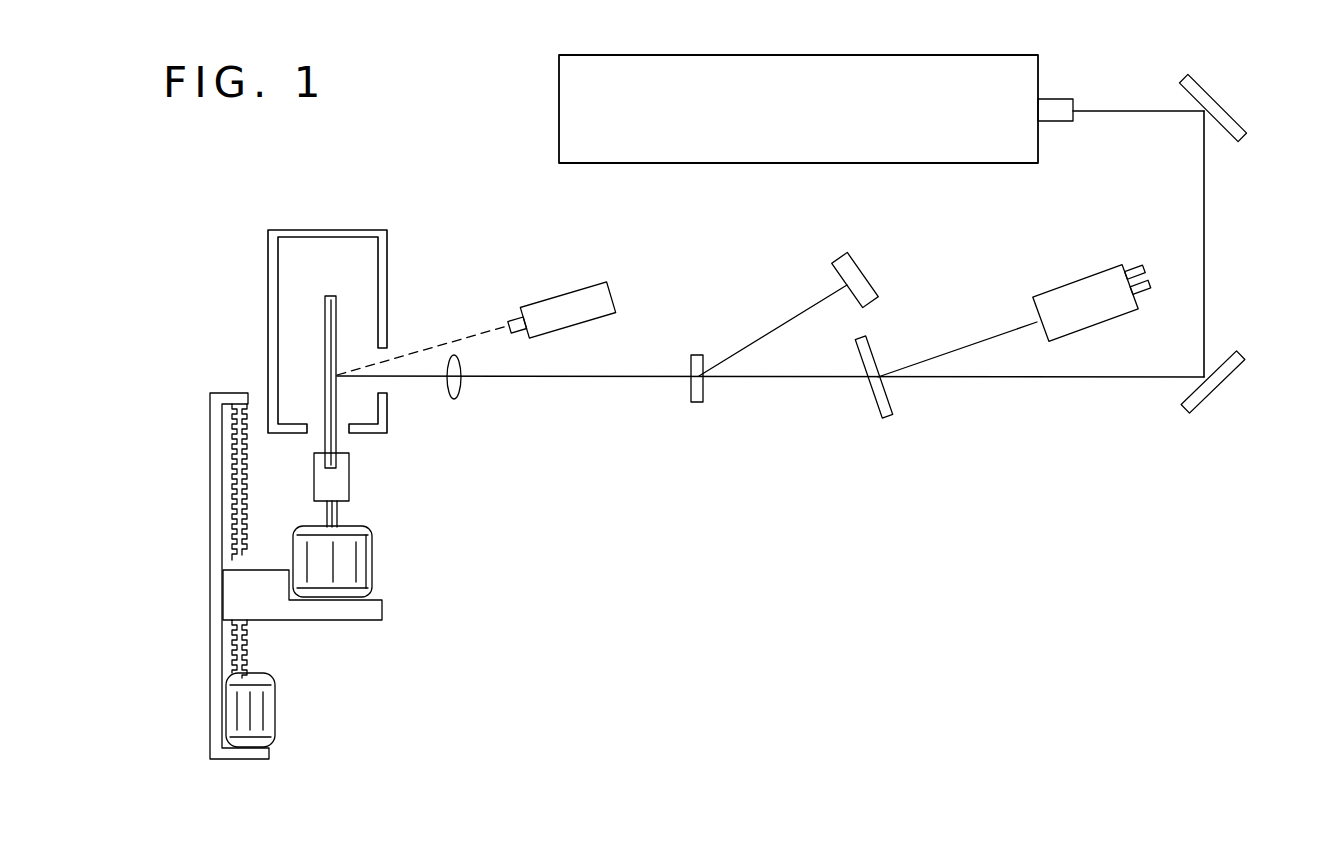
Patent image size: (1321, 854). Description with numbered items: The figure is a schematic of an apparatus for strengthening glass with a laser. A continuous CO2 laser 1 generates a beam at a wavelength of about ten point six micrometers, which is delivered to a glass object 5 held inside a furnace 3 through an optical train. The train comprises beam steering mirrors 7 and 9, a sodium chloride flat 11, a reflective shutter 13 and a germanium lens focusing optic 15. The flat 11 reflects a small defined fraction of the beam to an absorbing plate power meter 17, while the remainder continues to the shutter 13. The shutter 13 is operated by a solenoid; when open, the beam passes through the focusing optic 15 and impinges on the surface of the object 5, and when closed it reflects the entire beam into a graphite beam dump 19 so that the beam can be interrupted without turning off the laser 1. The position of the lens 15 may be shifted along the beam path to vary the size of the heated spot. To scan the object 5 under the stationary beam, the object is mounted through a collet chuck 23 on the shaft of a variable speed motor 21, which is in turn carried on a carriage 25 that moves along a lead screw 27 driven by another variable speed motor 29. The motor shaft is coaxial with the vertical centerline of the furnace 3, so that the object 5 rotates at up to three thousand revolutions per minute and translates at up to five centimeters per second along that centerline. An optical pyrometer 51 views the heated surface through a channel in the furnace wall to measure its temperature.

The continuous CO2 laser 1 is at (559, 77).
The furnace 3 is at (268, 282).
The glass object 5 is at (325, 330).
The beam steering mirror 7 is at (1248, 124).
The beam steering mirror 9 is at (1232, 380).
The sodium chloride flat 11 is at (893, 400).
The reflective shutter 13 is at (703, 390).
The germanium lens focusing optic 15 is at (460, 386).
The absorbing plate power meter 17 is at (1098, 323).
The graphite beam dump 19 is at (873, 290).
The variable speed motor 21 is at (372, 570).
The collet chuck 23 is at (349, 480).
The carriage 25 is at (315, 622).
The lead screw 27 is at (230, 474).
The variable speed motor 29 is at (250, 725).
The optical pyrometer 51 is at (578, 283).